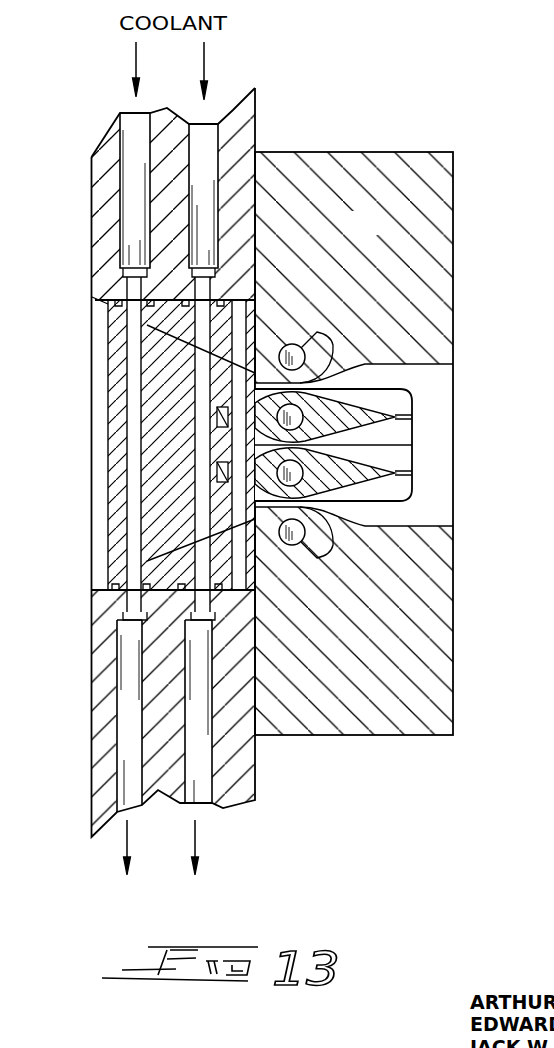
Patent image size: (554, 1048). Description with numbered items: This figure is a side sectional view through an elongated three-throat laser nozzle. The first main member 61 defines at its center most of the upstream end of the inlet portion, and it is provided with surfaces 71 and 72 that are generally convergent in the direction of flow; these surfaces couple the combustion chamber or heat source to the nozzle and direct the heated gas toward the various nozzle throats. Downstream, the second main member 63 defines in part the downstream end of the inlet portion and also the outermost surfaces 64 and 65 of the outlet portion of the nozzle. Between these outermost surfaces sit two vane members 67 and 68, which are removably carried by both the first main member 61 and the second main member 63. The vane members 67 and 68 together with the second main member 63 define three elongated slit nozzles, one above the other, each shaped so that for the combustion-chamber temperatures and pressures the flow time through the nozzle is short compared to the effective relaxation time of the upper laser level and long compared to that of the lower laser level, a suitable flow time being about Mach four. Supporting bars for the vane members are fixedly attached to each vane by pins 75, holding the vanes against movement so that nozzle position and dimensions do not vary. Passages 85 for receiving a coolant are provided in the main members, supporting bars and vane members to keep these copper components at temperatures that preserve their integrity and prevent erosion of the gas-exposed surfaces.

The first main member 61 is at (177, 625).
The second main member 63 is at (378, 235).
The outermost surface of the outlet portion 64 is at (423, 528).
The outermost surface of the outlet portion 65 is at (420, 364).
The vane member 67 is at (392, 470).
The vane member 68 is at (392, 412).
The convergent surface 71 is at (104, 582).
The convergent surface 72 is at (97, 303).
The pin 75 is at (250, 323).
The coolant passage 85 is at (317, 332).